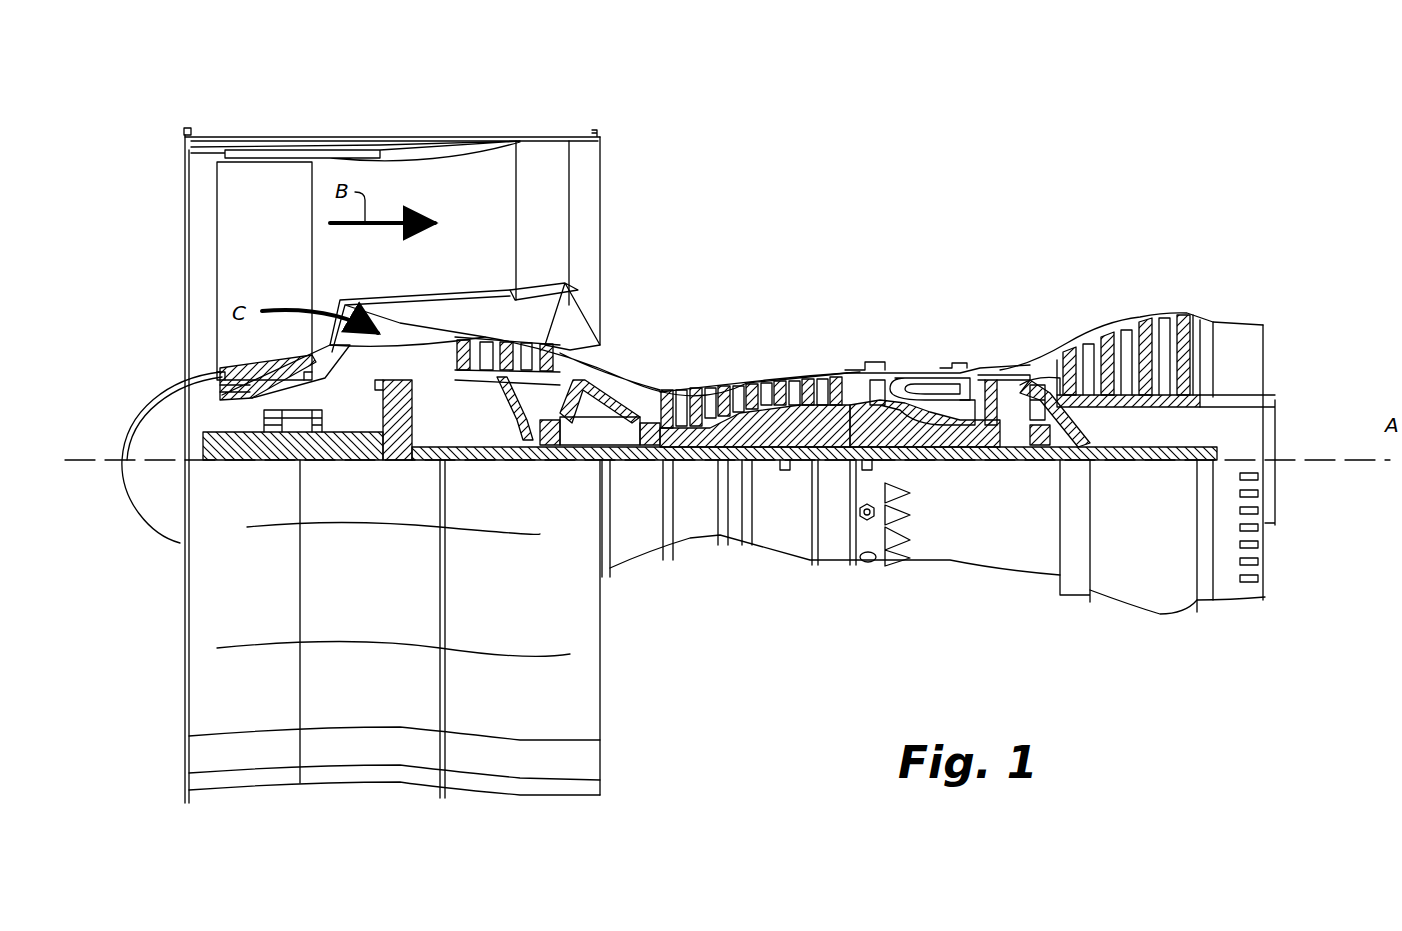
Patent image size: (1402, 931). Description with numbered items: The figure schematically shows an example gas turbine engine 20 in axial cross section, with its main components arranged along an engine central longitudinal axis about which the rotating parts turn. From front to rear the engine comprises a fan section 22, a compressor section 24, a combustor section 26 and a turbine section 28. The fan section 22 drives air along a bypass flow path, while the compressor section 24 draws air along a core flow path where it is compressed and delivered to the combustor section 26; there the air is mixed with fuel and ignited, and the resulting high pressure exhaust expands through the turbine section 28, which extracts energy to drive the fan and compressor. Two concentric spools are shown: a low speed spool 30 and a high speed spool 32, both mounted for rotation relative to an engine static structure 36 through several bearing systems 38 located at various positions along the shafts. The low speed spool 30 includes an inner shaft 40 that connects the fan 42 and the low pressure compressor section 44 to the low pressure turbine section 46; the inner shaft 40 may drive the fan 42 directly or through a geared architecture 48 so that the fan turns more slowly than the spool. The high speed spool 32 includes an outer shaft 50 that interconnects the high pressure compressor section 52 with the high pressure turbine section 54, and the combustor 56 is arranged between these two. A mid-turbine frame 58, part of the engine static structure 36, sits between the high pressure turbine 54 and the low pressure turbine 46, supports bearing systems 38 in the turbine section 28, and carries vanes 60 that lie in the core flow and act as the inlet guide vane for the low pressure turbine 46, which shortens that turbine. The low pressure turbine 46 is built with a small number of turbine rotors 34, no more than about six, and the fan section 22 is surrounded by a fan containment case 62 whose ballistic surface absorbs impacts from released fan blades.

The gas turbine engine 20 is at (920, 190).
The fan section 22 is at (421, 105).
The compressor section 24 is at (861, 254).
The combustor section 26 is at (969, 254).
The turbine section 28 is at (975, 254).
The low speed spool 30 is at (780, 462).
The high speed spool 32 is at (828, 427).
The turbine rotors 34 is at (1133, 407).
The engine static structure 36 is at (826, 539).
The bearing systems 38 is at (273, 440).
The inner shaft 40 is at (622, 462).
The fan 42 is at (264, 271).
The low pressure compressor section 44 is at (543, 343).
The low pressure turbine section 46 is at (1133, 340).
The geared architecture 48 is at (398, 452).
The outer shaft 50 is at (917, 437).
The high pressure compressor section 52 is at (748, 423).
The high pressure turbine section 54 is at (990, 370).
The combustor 56 is at (912, 395).
The mid-turbine frame 58 is at (1050, 355).
The vanes 60 is at (1030, 380).
The fan containment case 62 is at (428, 137).